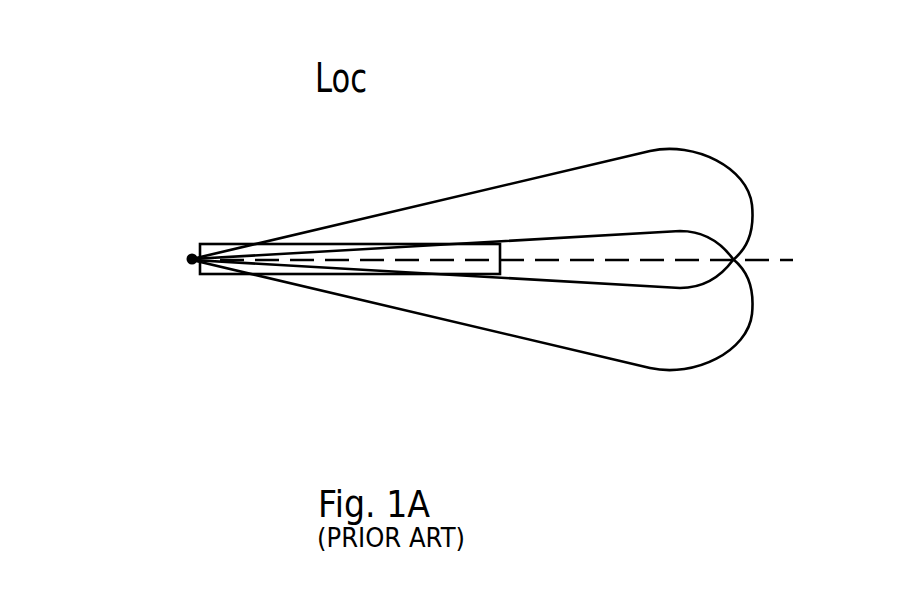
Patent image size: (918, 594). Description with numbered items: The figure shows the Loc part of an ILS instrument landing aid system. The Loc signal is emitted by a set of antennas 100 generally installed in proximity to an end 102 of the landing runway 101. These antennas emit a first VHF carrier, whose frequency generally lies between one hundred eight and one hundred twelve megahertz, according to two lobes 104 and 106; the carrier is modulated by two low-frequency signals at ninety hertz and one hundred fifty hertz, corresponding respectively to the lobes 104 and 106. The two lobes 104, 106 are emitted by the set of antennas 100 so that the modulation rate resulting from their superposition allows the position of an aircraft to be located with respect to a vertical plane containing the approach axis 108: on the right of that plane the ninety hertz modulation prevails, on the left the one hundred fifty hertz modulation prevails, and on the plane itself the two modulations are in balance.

The set of antennas 100 is at (185, 259).
The landing runway 101 is at (215, 277).
The end of the landing runway 102 is at (300, 243).
The lobe 104 is at (543, 175).
The lobe 106 is at (548, 347).
The approach axis 108 is at (782, 257).